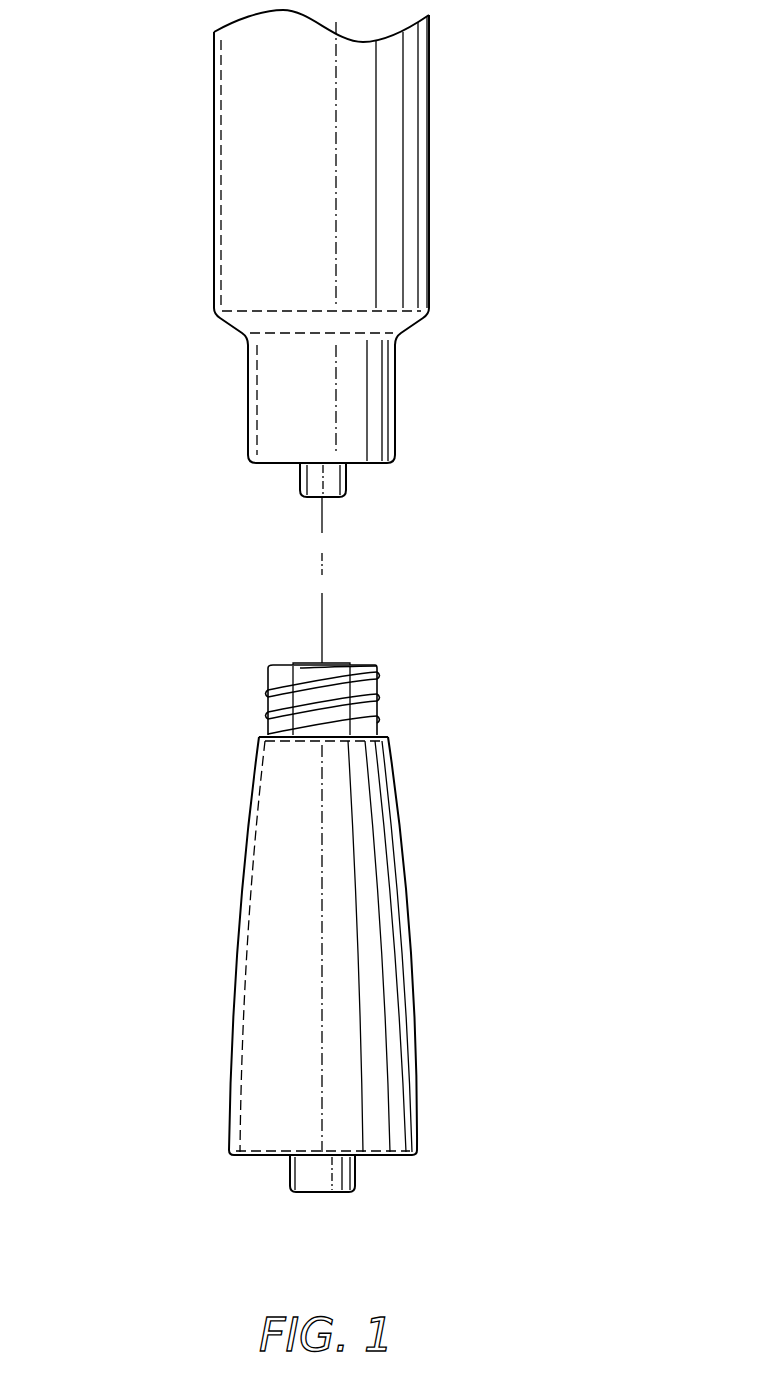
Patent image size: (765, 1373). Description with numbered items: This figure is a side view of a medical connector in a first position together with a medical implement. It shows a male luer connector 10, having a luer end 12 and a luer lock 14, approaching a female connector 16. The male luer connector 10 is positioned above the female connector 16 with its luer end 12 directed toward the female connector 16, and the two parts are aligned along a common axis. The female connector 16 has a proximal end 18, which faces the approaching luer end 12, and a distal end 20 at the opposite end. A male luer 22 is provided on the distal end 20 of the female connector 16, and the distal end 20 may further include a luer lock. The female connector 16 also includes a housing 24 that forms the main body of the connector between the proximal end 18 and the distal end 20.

The male luer connector 10 is at (170, 336).
The luer end 12 is at (300, 480).
The luer lock 14 is at (190, 418).
The female connector 16 is at (470, 756).
The proximal end 18 is at (372, 622).
The distal end 20 is at (274, 1217).
The male luer 22 is at (357, 1168).
The housing 24 is at (240, 912).